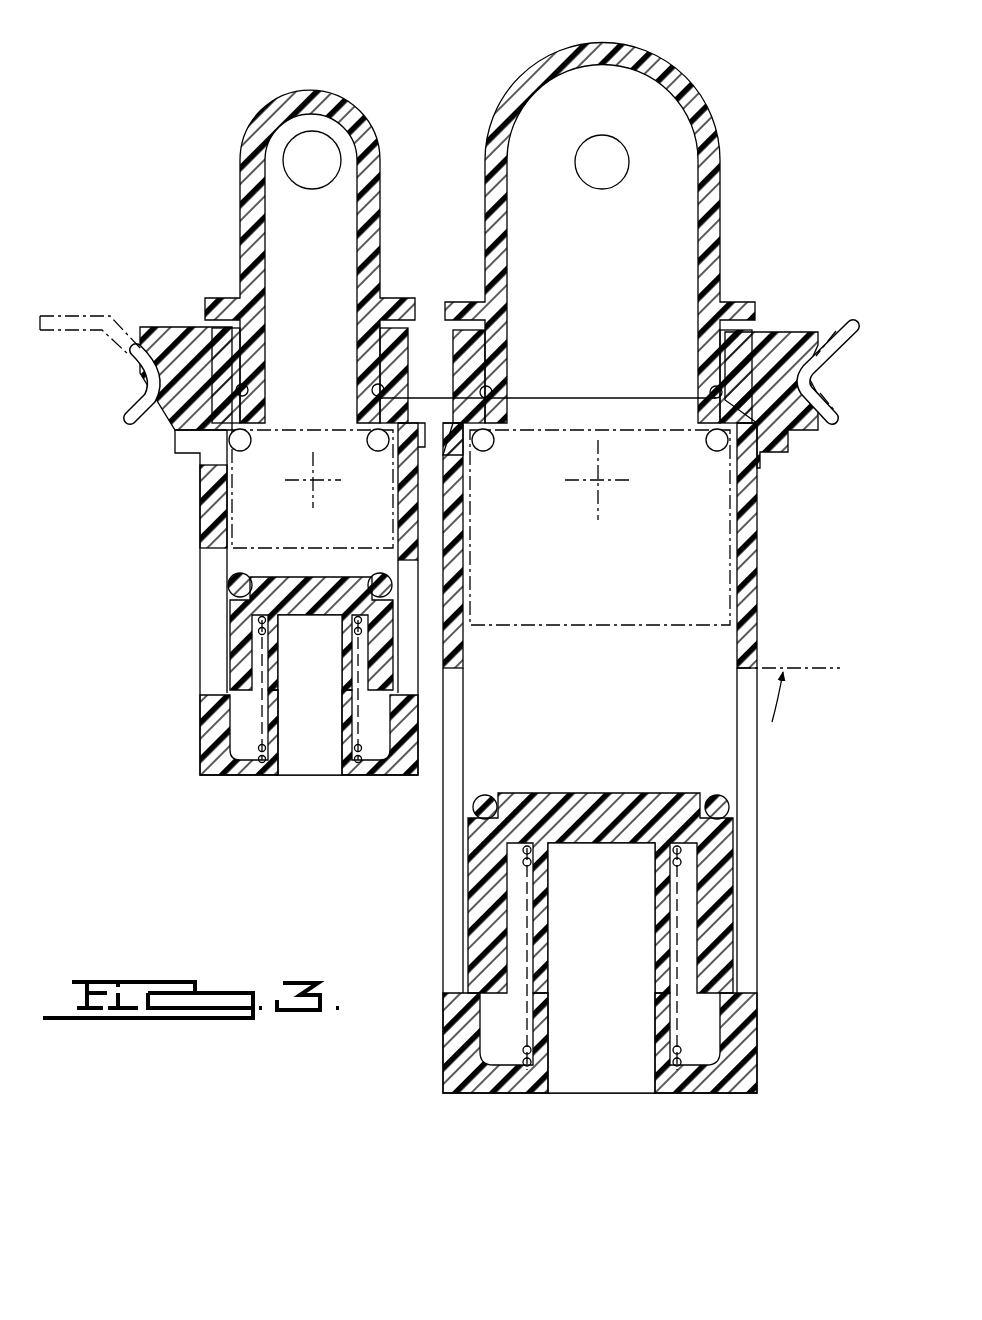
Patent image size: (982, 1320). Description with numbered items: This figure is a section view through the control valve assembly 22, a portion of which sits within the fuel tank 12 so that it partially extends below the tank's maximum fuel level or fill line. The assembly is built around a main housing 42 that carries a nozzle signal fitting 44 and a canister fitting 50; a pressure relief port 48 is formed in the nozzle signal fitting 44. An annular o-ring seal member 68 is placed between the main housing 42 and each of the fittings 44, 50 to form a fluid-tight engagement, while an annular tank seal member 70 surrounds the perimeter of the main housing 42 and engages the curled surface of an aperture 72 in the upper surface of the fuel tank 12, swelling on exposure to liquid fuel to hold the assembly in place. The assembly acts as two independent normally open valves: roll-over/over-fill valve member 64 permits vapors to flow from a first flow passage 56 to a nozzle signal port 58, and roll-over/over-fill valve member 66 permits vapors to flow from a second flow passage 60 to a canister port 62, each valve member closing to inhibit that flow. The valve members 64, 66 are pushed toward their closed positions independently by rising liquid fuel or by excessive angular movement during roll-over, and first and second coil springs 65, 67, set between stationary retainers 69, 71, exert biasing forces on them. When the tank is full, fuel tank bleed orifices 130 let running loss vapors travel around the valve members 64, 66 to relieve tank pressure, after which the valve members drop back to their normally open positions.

The fuel tank 12 is at (95, 316).
The control valve assembly 22 is at (190, 105).
The main housing 42 is at (208, 583).
The nozzle signal fitting 44 is at (725, 222).
The pressure relief port 48 is at (604, 148).
The canister fitting 50 is at (238, 210).
The first flow passage 56 is at (720, 575).
The nozzle signal port 58 is at (700, 375).
The second flow passage 60 is at (232, 552).
The canister port 62 is at (342, 203).
The roll-over/over-fill valve member 64 is at (726, 894).
The first coil spring 65 is at (683, 1048).
The roll-over/over-fill valve member 66 is at (238, 636).
The second coil spring 67 is at (262, 750).
The annular o-ring seal member 68 is at (378, 390).
The stationary retainer 69 is at (692, 1093).
The annular tank seal member 70 is at (150, 418).
The stationary retainer 71 is at (360, 775).
The aperture 72 is at (150, 372).
The fuel tank bleed orifice 130 is at (316, 482).